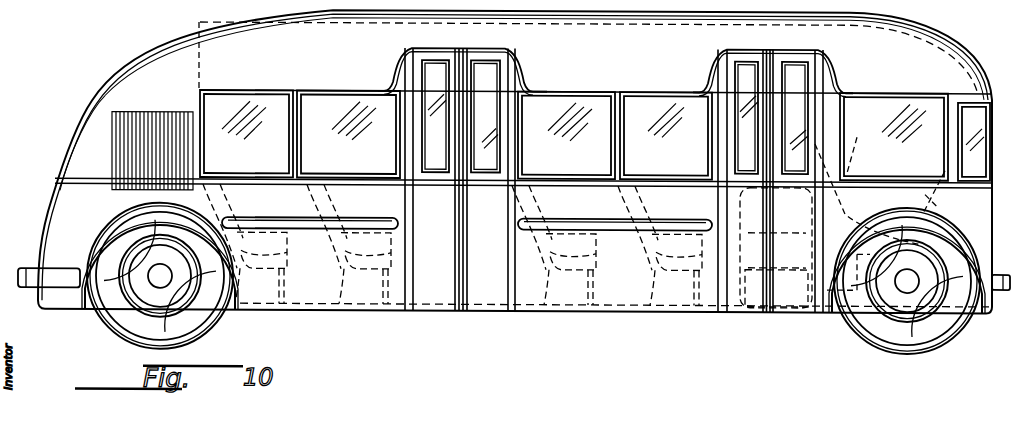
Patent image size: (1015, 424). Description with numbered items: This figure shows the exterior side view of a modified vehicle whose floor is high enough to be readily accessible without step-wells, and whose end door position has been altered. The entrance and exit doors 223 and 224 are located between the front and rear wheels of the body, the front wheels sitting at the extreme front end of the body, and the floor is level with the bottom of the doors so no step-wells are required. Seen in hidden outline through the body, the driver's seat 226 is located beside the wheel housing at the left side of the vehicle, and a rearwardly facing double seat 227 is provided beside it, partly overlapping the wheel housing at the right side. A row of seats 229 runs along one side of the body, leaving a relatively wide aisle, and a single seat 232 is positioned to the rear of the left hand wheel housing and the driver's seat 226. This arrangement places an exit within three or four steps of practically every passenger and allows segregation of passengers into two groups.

The entrance door 223 is at (795, 293).
The exit door 224 is at (478, 292).
The driver's seat 226 is at (867, 182).
The rearwardly facing double seat 227 is at (937, 202).
The row of seats 229 is at (650, 255).
The single seat 232 is at (755, 263).